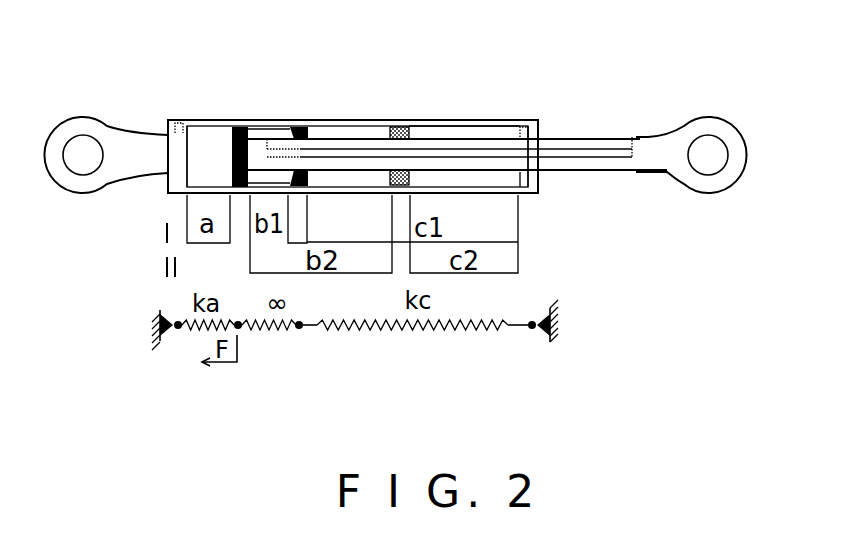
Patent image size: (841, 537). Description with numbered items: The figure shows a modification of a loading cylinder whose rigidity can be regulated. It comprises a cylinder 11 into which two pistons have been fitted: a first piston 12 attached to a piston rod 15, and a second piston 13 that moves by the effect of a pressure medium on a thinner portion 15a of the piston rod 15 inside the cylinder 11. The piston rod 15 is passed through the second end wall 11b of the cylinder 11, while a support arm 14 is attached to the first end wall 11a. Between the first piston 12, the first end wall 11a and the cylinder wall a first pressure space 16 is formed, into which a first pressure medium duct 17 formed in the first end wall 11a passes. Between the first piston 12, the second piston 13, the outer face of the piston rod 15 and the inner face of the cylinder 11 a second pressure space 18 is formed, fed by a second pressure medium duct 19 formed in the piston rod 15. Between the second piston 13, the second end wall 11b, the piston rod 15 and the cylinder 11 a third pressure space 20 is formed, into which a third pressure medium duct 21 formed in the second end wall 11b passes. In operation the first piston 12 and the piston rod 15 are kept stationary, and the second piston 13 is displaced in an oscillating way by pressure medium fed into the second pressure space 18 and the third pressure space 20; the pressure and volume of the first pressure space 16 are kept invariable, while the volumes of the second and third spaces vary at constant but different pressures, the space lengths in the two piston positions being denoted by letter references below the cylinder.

The cylinder 11 is at (458, 120).
The first end wall 11a is at (177, 186).
The second end wall 11b is at (540, 190).
The first piston 12 is at (243, 120).
The second piston 13 is at (300, 125).
The support arm 14 is at (121, 140).
The piston rod 15 is at (599, 135).
The thinner portion 15a is at (377, 120).
The first pressure space 16 is at (204, 142).
The first pressure medium duct 17 is at (178, 113).
The second pressure space 18 is at (267, 123).
The second pressure medium duct 19 is at (633, 133).
The third pressure space 20 is at (487, 117).
The third pressure medium duct 21 is at (527, 114).